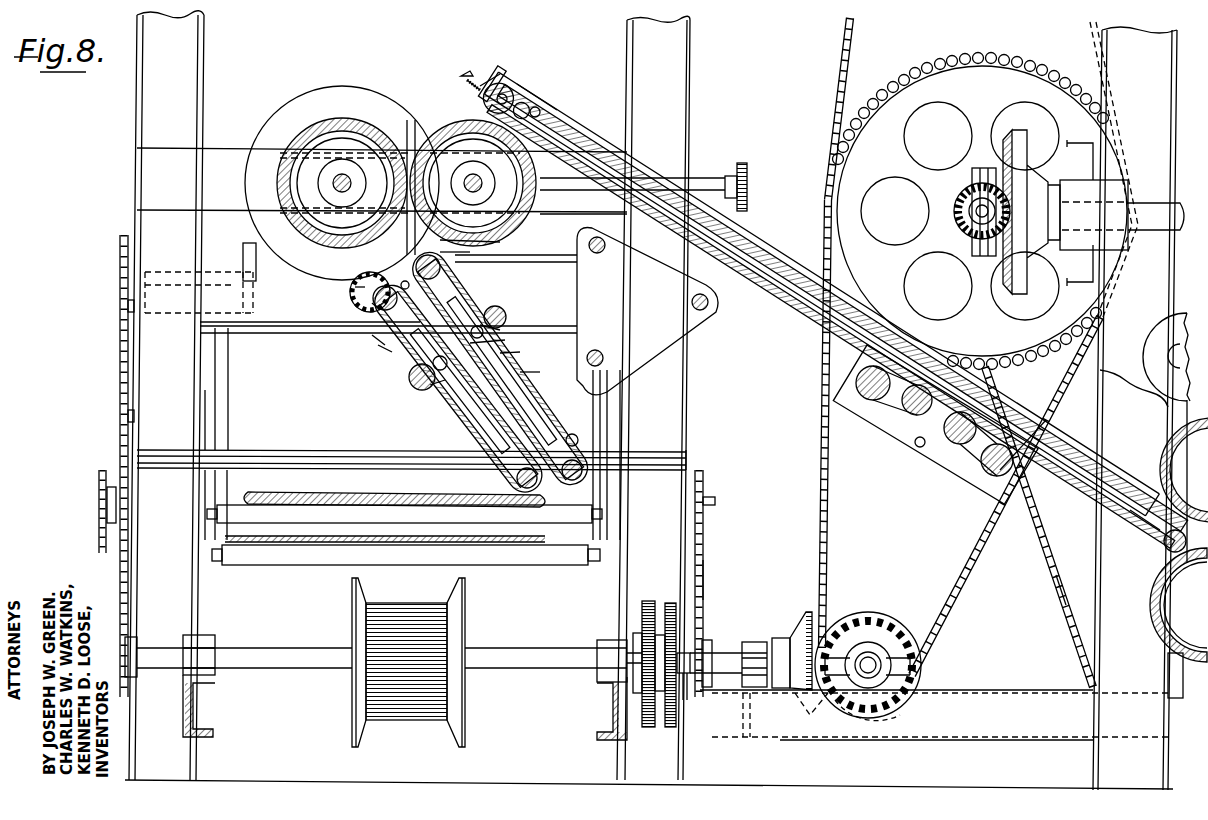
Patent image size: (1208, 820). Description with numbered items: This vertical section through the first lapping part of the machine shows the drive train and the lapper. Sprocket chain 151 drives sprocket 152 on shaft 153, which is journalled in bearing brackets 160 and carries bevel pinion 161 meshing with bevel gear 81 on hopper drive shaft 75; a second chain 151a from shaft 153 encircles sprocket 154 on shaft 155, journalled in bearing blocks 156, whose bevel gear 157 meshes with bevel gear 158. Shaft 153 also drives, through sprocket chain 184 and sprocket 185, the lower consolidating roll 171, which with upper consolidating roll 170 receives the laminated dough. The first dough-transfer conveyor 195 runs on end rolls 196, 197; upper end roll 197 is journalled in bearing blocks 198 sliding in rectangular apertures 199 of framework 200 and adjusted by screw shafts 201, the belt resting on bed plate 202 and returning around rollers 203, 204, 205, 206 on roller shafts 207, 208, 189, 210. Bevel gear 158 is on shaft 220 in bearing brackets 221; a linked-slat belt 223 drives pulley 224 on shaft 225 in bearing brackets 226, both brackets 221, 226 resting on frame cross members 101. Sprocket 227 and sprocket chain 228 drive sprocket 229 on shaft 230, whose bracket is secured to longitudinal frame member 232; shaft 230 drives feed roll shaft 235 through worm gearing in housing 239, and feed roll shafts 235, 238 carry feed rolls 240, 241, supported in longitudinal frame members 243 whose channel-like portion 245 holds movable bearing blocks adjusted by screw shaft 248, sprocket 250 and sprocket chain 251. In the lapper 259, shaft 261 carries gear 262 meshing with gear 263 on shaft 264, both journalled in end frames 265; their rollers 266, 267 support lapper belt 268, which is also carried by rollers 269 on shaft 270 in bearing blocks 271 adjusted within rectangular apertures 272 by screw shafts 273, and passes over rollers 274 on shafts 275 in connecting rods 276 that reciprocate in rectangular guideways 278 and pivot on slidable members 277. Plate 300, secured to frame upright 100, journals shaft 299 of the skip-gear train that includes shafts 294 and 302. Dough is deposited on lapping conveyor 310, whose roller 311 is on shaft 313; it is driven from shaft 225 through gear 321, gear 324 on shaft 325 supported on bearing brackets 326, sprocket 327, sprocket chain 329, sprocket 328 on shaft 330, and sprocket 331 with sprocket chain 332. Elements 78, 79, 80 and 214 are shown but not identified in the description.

The hopper drive shaft 75 is at (1155, 206).
The bearing block 78 is at (1094, 215).
The bracket 79 is at (1073, 143).
The frame post 80 is at (1152, 120).
The bevel gear 81 is at (1015, 147).
The frame upright 100 is at (204, 52).
The frame cross members 101 is at (210, 733).
The sprocket chain 151 is at (843, 50).
The chain 151a is at (1002, 62).
The sprocket 152 is at (921, 70).
The shaft 153 is at (978, 208).
The sprocket 154 is at (897, 630).
The shaft 155 is at (866, 673).
The bearing blocks 156 is at (893, 665).
The bevel gear 157 is at (868, 604).
The bevel gear 158 is at (810, 611).
The bearing brackets 160 is at (982, 168).
The bevel pinion 161 is at (966, 230).
The upper consolidating roll 170 is at (1165, 448).
The lower consolidating roll 171 is at (1160, 610).
The sprocket chain 184 is at (960, 288).
The sprocket 185 is at (1064, 603).
The roller shaft 189 is at (1025, 470).
The first dough-transfer conveyor 195 is at (1152, 523).
The end roll 196 is at (1170, 548).
The upper end roll 197 is at (504, 93).
The bearing blocks 198 is at (527, 103).
The rectangular apertures 199 is at (540, 109).
The dough-transfer conveyor framework 200 is at (472, 103).
The screw shafts 201 is at (466, 77).
The bed plate 202 is at (795, 268).
The roller 203 is at (910, 420).
The roller 204 is at (857, 378).
The roller 205 is at (996, 478).
The roller 206 is at (957, 446).
The roller shaft 207 is at (890, 418).
The roller shaft 208 is at (840, 401).
The roller shaft 210 is at (975, 466).
The pin 214 is at (917, 448).
The shaft 220 is at (728, 655).
The bearing brackets 221 is at (763, 641).
The belt 223 is at (416, 598).
The pulley 224 is at (354, 601).
The shaft 225 is at (305, 656).
The bearing brackets 226 is at (226, 631).
The sprocket 227 is at (158, 644).
The sprocket chain 228 is at (120, 348).
The sprocket 229 is at (133, 277).
The shaft 230 is at (199, 292).
The longitudinal frame member 232 is at (200, 323).
The feed roll shaft 235 is at (332, 182).
The feed roll shaft 238 is at (483, 183).
The housing 239 is at (266, 122).
The feed roll 240 is at (302, 125).
The feed roll 241 is at (438, 128).
The longitudinal frame members 243 is at (184, 151).
The channel-like portion 245 is at (413, 263).
The screw shaft 248 is at (708, 178).
The sprocket 250 is at (748, 186).
The sprocket chain 251 is at (748, 167).
The lapper 259 is at (360, 346).
The shaft 261 is at (368, 288).
The gear 262 is at (502, 242).
The gear 263 is at (352, 287).
The shaft 264 is at (371, 300).
The end frames 265 is at (378, 347).
The roller 266 is at (441, 268).
The roller 267 is at (372, 308).
The lapper belt 268 is at (528, 376).
The rollers 269 is at (484, 306).
The shaft 270 is at (506, 341).
The bearing blocks 271 is at (432, 386).
The rectangular apertures 272 is at (520, 355).
The screw shafts 273 is at (408, 385).
The rollers 274 is at (507, 313).
The shafts 275 is at (512, 314).
The connecting rods 276 is at (546, 392).
The slidable members 277 is at (582, 444).
The rectangular guideways 278 is at (472, 252).
The shaft 294 is at (610, 348).
The shaft 299 is at (691, 302).
The plate 300 is at (700, 322).
The shaft 302 is at (604, 253).
The lapping conveyor 310 is at (292, 553).
The roller 311 is at (404, 514).
The shaft 313 is at (215, 509).
The gear 321 is at (649, 602).
The gear 324 is at (669, 697).
The shaft 325 is at (685, 700).
The bearing brackets 326 is at (601, 641).
The sprocket 327 is at (710, 641).
The sprocket 328 is at (704, 494).
The sprocket chain 329 is at (704, 592).
The shaft 330 is at (715, 503).
The sprocket 331 is at (99, 490).
The sprocket chain 332 is at (104, 540).